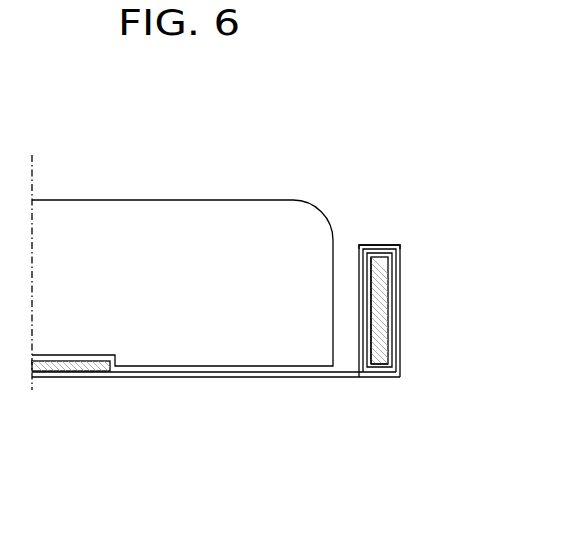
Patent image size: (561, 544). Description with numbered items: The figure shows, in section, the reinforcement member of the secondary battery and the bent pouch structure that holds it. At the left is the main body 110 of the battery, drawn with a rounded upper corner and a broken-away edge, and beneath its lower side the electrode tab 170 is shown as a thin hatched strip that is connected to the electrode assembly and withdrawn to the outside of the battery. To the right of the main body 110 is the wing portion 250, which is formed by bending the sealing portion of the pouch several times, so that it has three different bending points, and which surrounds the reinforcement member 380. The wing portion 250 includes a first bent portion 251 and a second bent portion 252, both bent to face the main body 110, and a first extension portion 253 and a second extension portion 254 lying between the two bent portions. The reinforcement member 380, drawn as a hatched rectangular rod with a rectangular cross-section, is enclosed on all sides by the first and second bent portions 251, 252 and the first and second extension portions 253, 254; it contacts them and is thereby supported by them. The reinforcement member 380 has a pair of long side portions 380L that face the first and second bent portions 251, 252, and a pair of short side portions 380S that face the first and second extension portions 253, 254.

The main body 110 is at (162, 208).
The electrode tab 170 is at (67, 372).
The wing portion 250 is at (257, 290).
The first bent portion 251 is at (399, 292).
The second bent portion 252 is at (361, 287).
The first extension portion 253 is at (386, 378).
The second extension portion 254 is at (380, 245).
The reinforcement member 380 is at (377, 357).
The long side portion 380L is at (371, 312).
The short side portion 380S is at (377, 368).